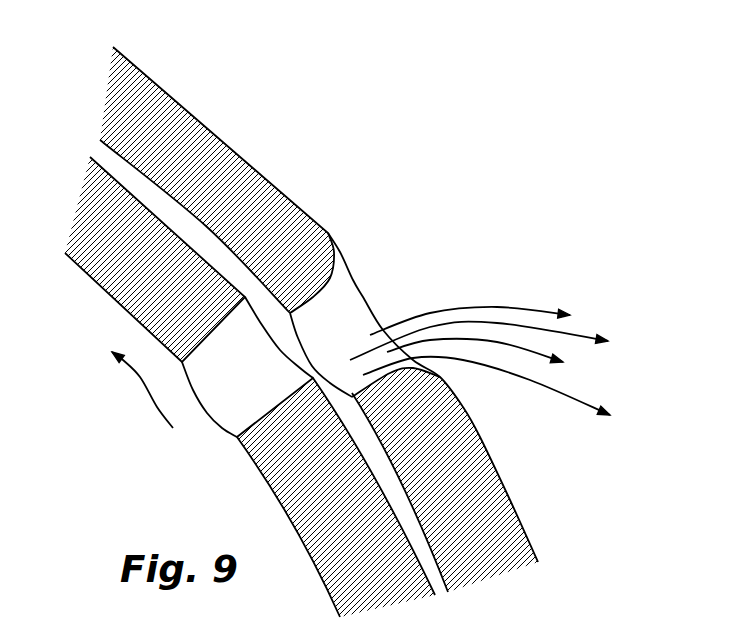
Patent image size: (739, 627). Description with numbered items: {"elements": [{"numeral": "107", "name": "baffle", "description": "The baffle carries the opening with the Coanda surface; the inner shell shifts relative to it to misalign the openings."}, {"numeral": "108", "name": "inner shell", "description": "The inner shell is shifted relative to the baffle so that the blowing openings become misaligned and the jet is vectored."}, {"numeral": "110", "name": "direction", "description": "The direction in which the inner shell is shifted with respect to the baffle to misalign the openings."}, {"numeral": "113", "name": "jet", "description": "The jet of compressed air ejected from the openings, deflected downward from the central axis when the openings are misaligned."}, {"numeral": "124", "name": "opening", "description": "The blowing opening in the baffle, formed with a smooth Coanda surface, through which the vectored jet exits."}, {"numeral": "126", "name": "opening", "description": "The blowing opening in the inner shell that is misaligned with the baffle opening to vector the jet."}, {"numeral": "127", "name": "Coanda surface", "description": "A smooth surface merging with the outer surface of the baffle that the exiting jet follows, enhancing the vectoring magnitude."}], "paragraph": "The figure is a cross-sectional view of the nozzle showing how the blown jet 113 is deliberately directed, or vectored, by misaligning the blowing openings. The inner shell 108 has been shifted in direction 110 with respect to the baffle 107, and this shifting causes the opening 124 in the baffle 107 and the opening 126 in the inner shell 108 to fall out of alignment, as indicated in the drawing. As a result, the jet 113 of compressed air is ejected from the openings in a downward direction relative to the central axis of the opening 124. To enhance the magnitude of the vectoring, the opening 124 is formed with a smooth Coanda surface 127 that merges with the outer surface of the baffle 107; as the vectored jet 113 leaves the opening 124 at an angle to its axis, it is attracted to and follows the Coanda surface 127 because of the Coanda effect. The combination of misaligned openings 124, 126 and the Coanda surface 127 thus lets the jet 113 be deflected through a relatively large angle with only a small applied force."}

The upper wall of slot nozzle 107 is at (197, 145).
The intermediate wall 108 is at (123, 273).
The air flow direction 110 is at (147, 383).
The discharged air flow 113 is at (510, 290).
The discharge channel 124 is at (340, 312).
The channel opening 126 is at (230, 402).
The outer wall surface 127 is at (338, 253).